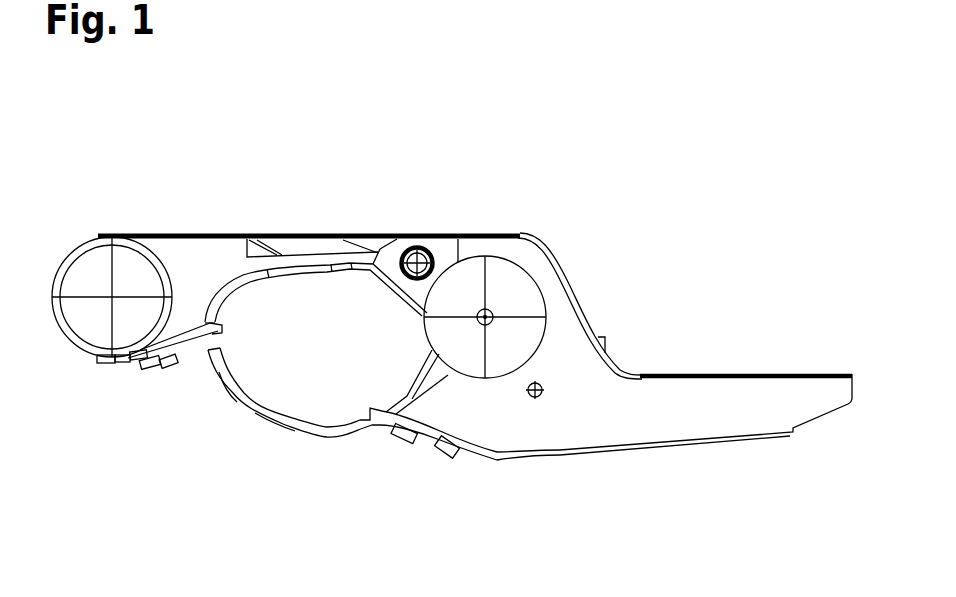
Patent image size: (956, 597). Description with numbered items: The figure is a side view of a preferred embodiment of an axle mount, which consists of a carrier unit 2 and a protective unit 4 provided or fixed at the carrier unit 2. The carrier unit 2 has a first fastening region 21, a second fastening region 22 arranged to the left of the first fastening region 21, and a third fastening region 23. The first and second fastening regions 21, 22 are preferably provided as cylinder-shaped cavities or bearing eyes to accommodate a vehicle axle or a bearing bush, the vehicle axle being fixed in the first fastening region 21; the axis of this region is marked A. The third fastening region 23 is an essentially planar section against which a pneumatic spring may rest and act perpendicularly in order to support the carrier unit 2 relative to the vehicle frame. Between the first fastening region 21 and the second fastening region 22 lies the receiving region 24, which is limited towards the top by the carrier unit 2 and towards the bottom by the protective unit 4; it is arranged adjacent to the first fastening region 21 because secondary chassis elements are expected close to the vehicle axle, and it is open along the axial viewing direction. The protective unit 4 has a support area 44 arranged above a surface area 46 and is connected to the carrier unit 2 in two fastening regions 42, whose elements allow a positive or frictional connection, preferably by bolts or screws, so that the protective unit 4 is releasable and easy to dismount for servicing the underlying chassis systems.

The carrier unit 2 is at (566, 337).
The protective unit 4 is at (360, 435).
The first fastening region 21 is at (503, 290).
The second fastening region 22 is at (92, 273).
The third fastening region 23 is at (732, 376).
The receiving region 24 is at (313, 332).
The fastening regions of the protective unit 42 is at (160, 366).
The support area 44 is at (273, 421).
The surface area 46 is at (230, 393).
The axis of rotation A is at (485, 317).